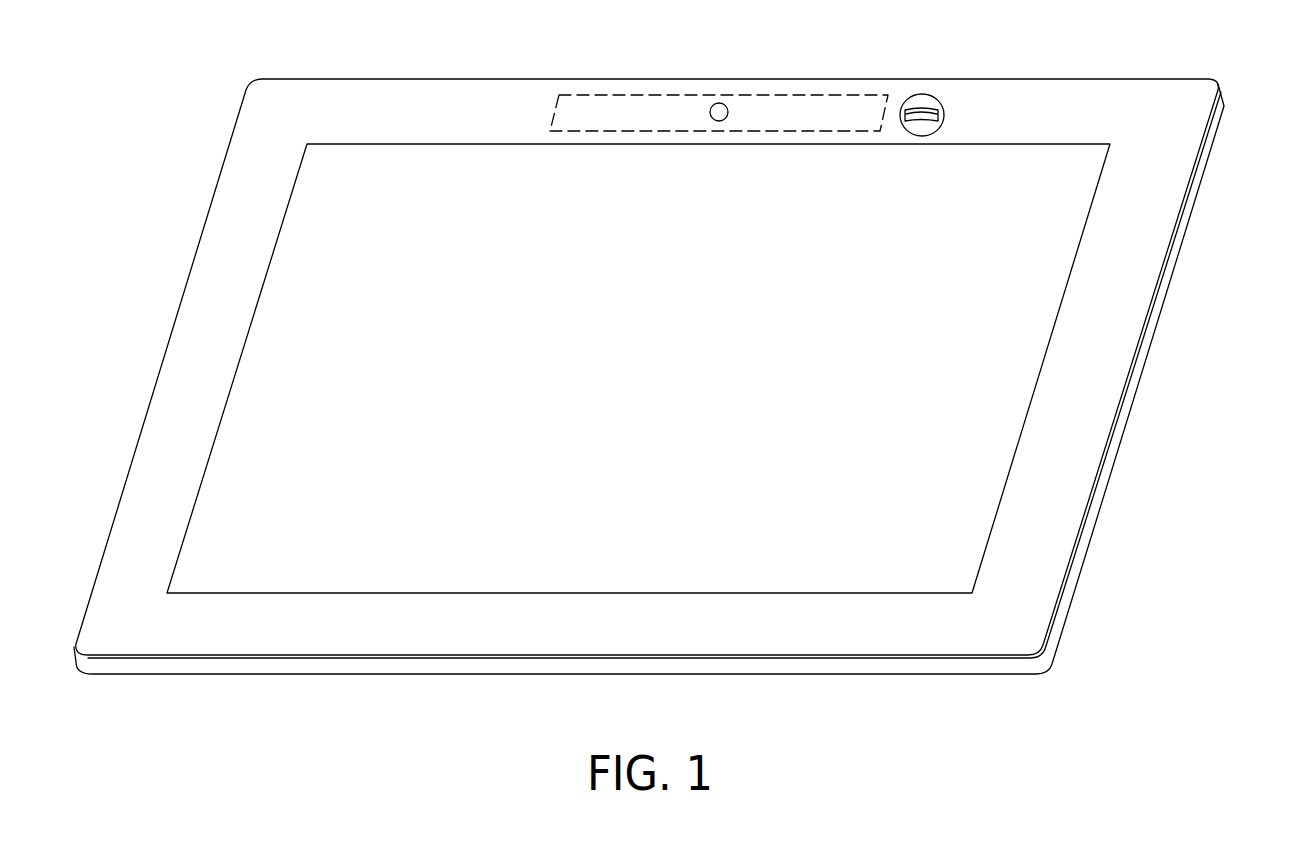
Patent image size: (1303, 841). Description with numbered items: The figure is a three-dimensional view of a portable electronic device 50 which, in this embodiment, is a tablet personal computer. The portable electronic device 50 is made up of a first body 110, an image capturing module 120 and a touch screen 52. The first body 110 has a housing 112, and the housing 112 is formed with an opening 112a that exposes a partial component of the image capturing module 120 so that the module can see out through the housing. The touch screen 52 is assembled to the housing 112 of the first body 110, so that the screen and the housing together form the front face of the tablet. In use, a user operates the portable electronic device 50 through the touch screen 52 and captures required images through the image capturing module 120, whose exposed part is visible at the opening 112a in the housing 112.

The portable electronic device 50 is at (678, 383).
The touch screen 52 is at (1022, 345).
The first body 110 is at (678, 346).
The housing 112 is at (677, 338).
The opening 112a is at (712, 107).
The image capturing module 120 is at (830, 103).